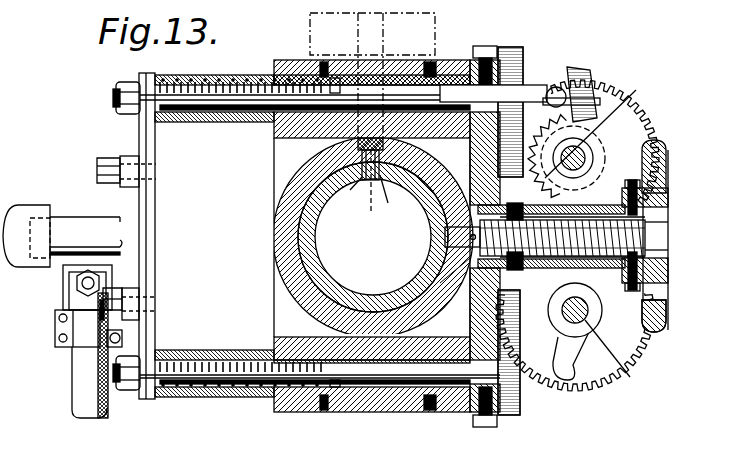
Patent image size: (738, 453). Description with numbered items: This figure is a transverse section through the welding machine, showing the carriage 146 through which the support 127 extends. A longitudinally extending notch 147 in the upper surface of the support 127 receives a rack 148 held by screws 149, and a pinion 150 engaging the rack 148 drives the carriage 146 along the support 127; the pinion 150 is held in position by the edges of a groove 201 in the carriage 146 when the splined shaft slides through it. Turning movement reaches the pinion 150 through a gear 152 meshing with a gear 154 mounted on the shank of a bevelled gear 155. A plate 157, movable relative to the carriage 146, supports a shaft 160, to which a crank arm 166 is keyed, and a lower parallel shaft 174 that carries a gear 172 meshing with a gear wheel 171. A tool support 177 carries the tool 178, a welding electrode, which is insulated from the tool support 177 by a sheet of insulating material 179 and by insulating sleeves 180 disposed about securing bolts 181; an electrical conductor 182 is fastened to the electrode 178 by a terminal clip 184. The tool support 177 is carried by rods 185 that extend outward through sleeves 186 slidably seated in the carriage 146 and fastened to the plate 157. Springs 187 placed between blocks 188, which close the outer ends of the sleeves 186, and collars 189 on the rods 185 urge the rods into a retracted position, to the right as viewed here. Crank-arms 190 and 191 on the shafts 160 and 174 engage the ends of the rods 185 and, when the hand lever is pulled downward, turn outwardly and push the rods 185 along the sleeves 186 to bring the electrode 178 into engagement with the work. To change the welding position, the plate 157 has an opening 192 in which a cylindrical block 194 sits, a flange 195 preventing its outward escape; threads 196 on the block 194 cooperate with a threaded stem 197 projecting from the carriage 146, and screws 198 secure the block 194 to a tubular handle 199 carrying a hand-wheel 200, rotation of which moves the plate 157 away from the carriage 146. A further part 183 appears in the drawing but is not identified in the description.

The support 127 is at (312, 302).
The carriage 146 is at (283, 293).
The notch 147 is at (349, 194).
The rack 148 is at (400, 197).
The screws 149 is at (367, 191).
The pinion 150 is at (372, 48).
The gear 152 is at (521, 60).
The gear 154 is at (493, 155).
The bevelled gear 155 is at (520, 137).
The plate 157 is at (508, 360).
The shaft 160 is at (632, 118).
The crank arm 166 is at (585, 68).
The gear wheel 171 is at (644, 142).
The gear 172 is at (645, 352).
The shaft 174 is at (623, 355).
The tool support 177 is at (148, 205).
The welding electrode 178 is at (78, 222).
The sheet of insulating material 179 is at (135, 140).
The insulating sleeves 180 is at (118, 148).
The securing bolts 181 is at (148, 172).
The electrical conductor 182 is at (82, 368).
The bracket 183 is at (87, 287).
The terminal clip 184 is at (75, 325).
The rods 185 is at (153, 74).
The sleeves 186 is at (256, 78).
The springs 187 is at (236, 78).
The blocks 188 is at (178, 78).
The collars 189 is at (336, 78).
The crank-arm 190 is at (608, 128).
The crank-arm 191 is at (572, 360).
The opening 192 is at (480, 300).
The block 194 is at (490, 278).
The flange 195 is at (472, 206).
The threads 196 is at (436, 255).
The stem 197 is at (668, 236).
The screws 198 is at (505, 290).
The tubular handle 199 is at (585, 262).
The hand-wheel 200 is at (668, 184).
The groove 201 is at (325, 182).